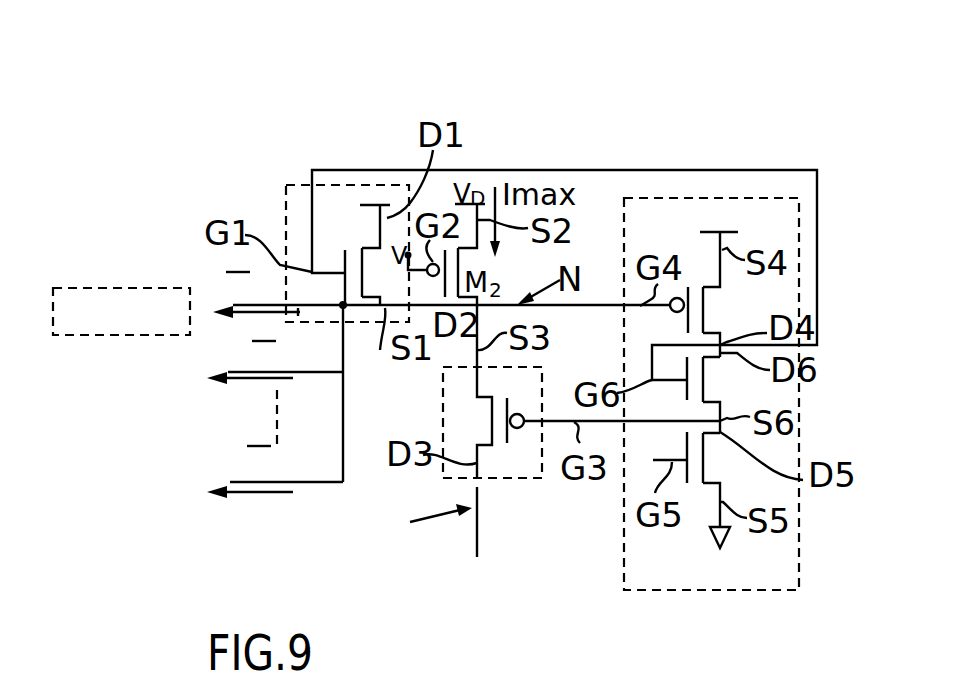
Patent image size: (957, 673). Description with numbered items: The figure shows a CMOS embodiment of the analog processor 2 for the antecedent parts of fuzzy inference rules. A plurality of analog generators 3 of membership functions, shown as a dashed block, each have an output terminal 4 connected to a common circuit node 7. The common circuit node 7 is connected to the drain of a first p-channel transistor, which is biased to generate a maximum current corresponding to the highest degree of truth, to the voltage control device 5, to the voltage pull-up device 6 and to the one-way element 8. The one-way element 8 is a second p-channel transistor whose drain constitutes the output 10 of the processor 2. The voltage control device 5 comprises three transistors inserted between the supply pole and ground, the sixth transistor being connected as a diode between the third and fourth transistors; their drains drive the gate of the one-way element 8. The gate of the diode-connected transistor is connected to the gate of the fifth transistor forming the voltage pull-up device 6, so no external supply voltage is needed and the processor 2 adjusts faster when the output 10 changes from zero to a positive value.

The analog processor 2 is at (488, 122).
The analog generator 3 is at (139, 340).
The output terminal 4 is at (273, 310).
The voltage control device 5 is at (661, 183).
The voltage pull-up device 6 is at (330, 173).
The common circuit node 7 is at (346, 312).
The one-way element 8 is at (525, 468).
The output 10 is at (477, 543).